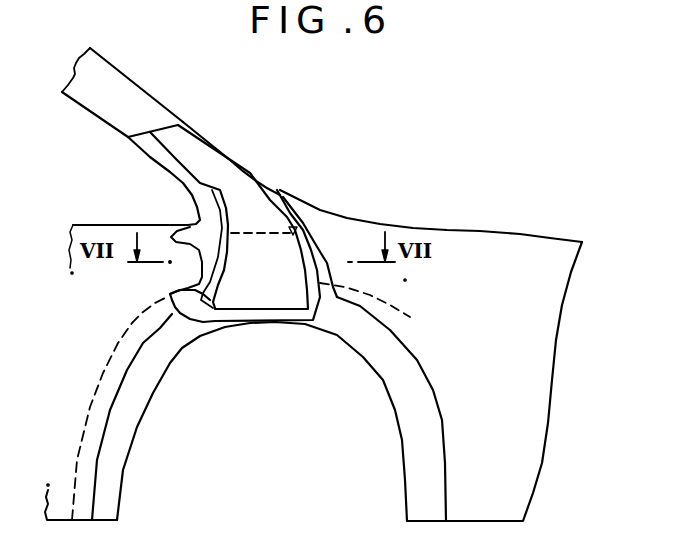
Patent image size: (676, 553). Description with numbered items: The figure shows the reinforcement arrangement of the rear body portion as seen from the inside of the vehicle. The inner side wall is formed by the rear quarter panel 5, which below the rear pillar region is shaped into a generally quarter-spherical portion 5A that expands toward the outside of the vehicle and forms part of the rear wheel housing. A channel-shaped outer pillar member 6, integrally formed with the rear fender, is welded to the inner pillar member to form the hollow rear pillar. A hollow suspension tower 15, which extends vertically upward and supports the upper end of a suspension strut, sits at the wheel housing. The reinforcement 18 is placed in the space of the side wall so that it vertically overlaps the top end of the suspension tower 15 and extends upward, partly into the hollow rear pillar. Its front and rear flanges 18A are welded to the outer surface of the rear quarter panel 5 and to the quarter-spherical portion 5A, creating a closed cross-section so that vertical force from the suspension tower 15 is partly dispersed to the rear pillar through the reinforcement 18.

The outer pillar member 6 is at (134, 96).
The reinforcement 18 is at (230, 183).
The flanges 18A is at (320, 243).
The suspension tower 15 is at (300, 228).
The rear quarter panel 5 is at (491, 249).
The quarter-spherical portion 5A is at (400, 380).